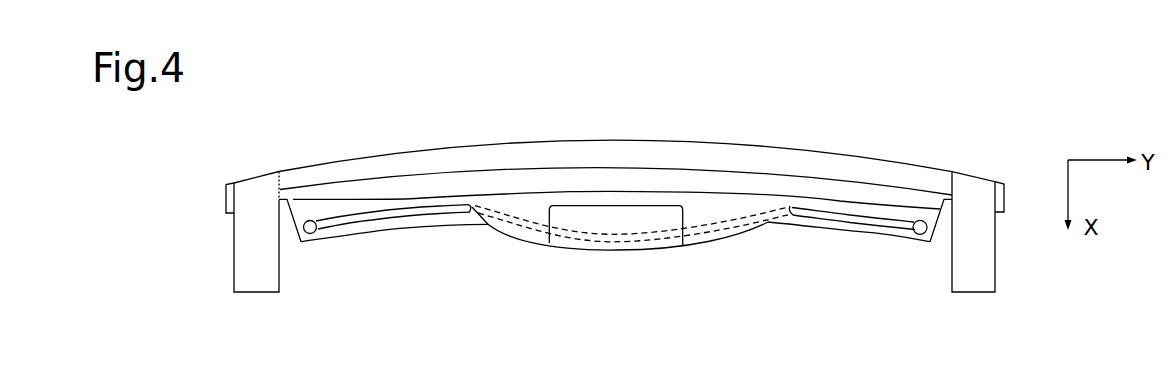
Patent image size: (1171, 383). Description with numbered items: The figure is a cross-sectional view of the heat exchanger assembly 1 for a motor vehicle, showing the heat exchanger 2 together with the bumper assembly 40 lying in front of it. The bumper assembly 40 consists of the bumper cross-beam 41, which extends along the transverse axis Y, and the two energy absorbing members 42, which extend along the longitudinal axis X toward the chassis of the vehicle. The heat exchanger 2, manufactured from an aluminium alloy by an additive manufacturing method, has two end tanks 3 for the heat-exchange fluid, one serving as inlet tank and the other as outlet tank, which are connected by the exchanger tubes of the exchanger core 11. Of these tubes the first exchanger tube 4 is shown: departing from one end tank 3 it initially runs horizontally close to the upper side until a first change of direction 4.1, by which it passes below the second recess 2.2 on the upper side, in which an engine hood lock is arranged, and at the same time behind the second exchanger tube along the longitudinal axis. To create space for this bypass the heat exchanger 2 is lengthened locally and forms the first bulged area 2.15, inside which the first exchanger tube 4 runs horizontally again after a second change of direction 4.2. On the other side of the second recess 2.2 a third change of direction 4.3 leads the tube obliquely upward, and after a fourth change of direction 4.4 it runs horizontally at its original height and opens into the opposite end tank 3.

The heat exchanger assembly 1 is at (834, 108).
The heat exchanger 2 is at (427, 174).
The second recess 2.2 is at (618, 211).
The first bulged area 2.15 is at (520, 272).
The end tank 3 is at (310, 220).
The first exchanger tube 4 is at (374, 212).
The first change of direction 4.1 is at (485, 187).
The second change of direction 4.2 is at (525, 205).
The third change of direction 4.3 is at (725, 244).
The fourth change of direction 4.4 is at (796, 183).
The exchanger core 11 is at (428, 253).
The bumper assembly 40 is at (991, 168).
The bumper cross-beam 41 is at (584, 141).
The energy absorbing member 42 is at (237, 247).